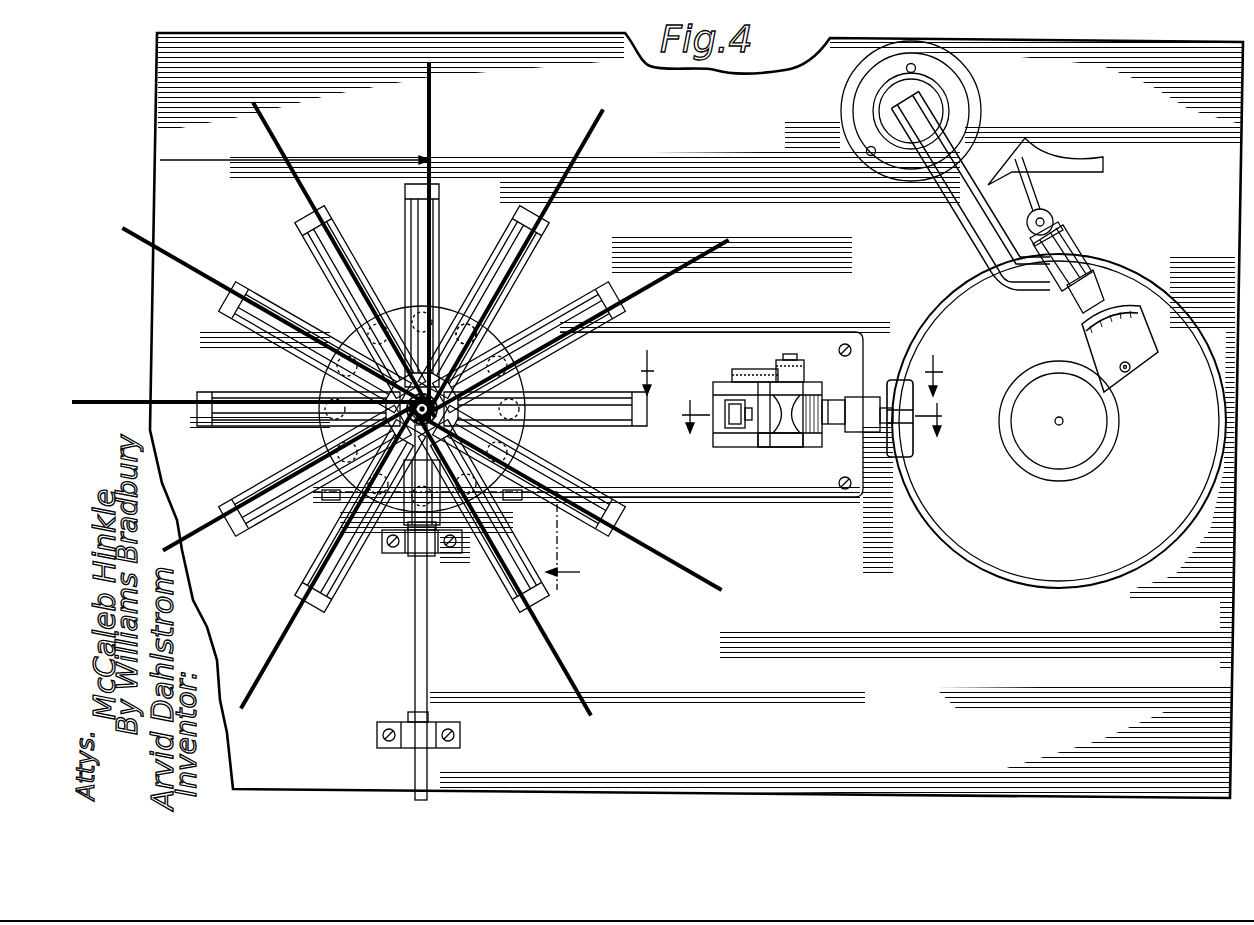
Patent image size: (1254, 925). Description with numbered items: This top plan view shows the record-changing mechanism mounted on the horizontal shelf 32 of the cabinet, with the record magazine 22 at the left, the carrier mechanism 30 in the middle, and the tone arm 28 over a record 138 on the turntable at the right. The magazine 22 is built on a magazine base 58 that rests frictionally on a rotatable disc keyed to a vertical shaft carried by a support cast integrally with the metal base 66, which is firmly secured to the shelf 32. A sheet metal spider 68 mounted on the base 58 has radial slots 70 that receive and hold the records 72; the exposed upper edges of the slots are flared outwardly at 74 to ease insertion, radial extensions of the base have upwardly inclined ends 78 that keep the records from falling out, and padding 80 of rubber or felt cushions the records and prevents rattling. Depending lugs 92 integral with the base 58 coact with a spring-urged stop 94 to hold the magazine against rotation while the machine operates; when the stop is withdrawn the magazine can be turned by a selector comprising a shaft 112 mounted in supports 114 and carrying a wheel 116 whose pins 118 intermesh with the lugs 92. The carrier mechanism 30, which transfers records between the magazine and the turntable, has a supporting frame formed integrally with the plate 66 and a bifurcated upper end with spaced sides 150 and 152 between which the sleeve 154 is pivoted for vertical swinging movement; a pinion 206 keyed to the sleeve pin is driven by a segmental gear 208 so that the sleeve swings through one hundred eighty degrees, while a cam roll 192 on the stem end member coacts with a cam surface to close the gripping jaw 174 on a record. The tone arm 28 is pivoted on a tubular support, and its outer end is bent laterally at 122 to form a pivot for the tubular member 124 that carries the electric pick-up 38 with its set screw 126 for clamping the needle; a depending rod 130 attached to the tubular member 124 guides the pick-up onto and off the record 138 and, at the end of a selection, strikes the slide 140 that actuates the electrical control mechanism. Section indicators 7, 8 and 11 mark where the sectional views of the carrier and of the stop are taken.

The shelf 32 is at (170, 93).
The records 72 is at (262, 118).
The section line 11- 11 is at (387, 370).
The record magazine 22 is at (305, 225).
The slots 70 is at (437, 212).
The flared upper edges 74 is at (422, 240).
The upwardly inclined ends 78 is at (298, 242).
The sheet metal spider 68 is at (546, 230).
The padding 80 is at (603, 293).
The depending lugs 92 is at (380, 340).
The stop 94 is at (518, 332).
The magazine base 58 is at (328, 386).
The wheel 116 is at (332, 500).
The pins 118 is at (514, 506).
The supports 114 is at (402, 556).
The shaft 112 is at (414, 664).
The section line 7- 7 is at (793, 373).
The section line 8- 8 is at (813, 418).
The side 150 is at (722, 384).
The segmental gear 208 is at (748, 368).
The pinion 206 is at (782, 358).
The cam roll 192 is at (733, 416).
The side 152 is at (767, 440).
The sleeve 154 is at (790, 432).
The metal base 66 is at (720, 497).
The carrier mechanism 30 is at (777, 421).
The gripping jaw 174 is at (910, 432).
The tone arm 28 is at (935, 206).
The slide 140 is at (1005, 155).
The depending rod 130 is at (1032, 192).
The tubular member 124 is at (1062, 248).
The laterally bent end 122 is at (1075, 268).
The electric pick-up 38 is at (1122, 333).
The set screw 126 is at (1128, 372).
The record 138 is at (937, 302).